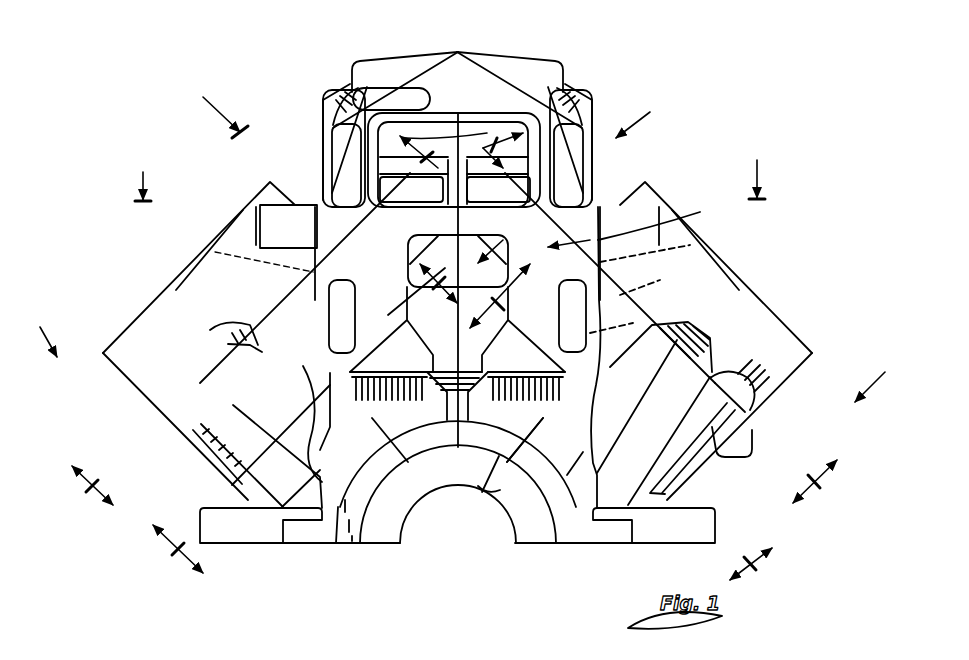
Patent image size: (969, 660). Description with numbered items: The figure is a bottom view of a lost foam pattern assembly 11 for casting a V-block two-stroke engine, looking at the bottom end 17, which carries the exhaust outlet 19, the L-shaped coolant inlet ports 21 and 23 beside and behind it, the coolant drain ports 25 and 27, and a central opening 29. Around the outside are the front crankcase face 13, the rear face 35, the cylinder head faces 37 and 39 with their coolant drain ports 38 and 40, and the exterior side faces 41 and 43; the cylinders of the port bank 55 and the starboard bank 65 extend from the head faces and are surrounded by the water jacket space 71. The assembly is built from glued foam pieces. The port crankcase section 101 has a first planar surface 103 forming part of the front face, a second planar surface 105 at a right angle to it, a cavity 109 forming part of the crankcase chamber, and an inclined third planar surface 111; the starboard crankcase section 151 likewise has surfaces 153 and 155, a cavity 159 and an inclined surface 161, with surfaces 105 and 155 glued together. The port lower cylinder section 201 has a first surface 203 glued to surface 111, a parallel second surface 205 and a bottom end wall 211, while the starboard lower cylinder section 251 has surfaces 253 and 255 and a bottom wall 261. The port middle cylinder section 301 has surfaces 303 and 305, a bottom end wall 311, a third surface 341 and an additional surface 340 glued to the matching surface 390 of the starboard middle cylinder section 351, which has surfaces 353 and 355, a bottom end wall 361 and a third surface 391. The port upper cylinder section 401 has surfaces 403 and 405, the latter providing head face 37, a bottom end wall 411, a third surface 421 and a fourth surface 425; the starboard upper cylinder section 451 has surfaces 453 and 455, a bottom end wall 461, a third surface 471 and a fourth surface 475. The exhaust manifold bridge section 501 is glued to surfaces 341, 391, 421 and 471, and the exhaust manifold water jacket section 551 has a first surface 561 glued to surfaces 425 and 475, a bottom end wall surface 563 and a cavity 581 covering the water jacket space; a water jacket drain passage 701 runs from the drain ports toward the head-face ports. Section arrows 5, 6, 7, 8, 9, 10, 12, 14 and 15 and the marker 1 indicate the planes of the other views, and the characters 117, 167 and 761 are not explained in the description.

The cylinder block 1 is at (658, 107).
The section line 5 is at (615, 451).
The section line 6 is at (322, 441).
The section line 7 is at (879, 389).
The section line 8 is at (845, 446).
The section line 9 is at (664, 318).
The section line 10 is at (662, 400).
The lost foam pattern assembly 11 is at (97, 223).
The section line 12 is at (229, 289).
The front crankcase face 13 is at (577, 563).
The section line 14 is at (314, 355).
The section line 15 is at (451, 148).
The bottom end 17 is at (693, 194).
The exhaust outlet 19 is at (495, 130).
The coolant inlet port 21 is at (353, 147).
The coolant inlet port 23 is at (547, 87).
The coolant drain port 25 is at (327, 322).
The coolant drain port 27 is at (610, 298).
The central opening 29 is at (441, 266).
The rear face 35 is at (389, 62).
The cylinder head face 37 is at (787, 323).
The coolant drain port 38 is at (740, 277).
The cylinder head face 39 is at (117, 340).
The coolant drain port 40 is at (177, 278).
The exterior side face 41 is at (222, 448).
The exterior side face 43 is at (707, 457).
The port bank 55 is at (797, 363).
The starboard bank 65 is at (147, 363).
The water jacket space 71 is at (576, 200).
The port crankcase section 101 is at (578, 515).
The first planar surface 103 is at (638, 543).
The second planar surface 105 is at (487, 490).
The cavity 109 is at (477, 523).
The third planar surface 111 is at (484, 469).
The bulkhead web 117 is at (572, 525).
The starboard crankcase section 151 is at (350, 527).
The first planar surface 153 is at (355, 545).
The second planar face 155 is at (455, 463).
The cavity 159 is at (433, 523).
The third planar surface 161 is at (383, 418).
The left pan rail 167 is at (345, 510).
The port lower cylinder section 201 is at (634, 480).
The first planar surface 203 is at (545, 405).
The second planar surface 205 is at (617, 356).
The bottom end wall 211 is at (603, 440).
The starboard lower cylinder section 251 is at (258, 496).
The first planar surface 253 is at (400, 398).
The second planar surface 255 is at (370, 345).
The bottom wall 261 is at (310, 420).
The port middle cylinder section 301 is at (763, 417).
The first planar surface 303 is at (612, 400).
The second planar surface 305 is at (660, 317).
The bottom end wall 311 is at (598, 268).
The fourth planar surface 340 is at (460, 218).
The third planar surface 341 is at (540, 205).
The starboard middle cylinder section 351 is at (228, 430).
The first planar surface 353 is at (303, 370).
The second planar surface 355 is at (290, 303).
The bottom end wall 361 is at (288, 226).
The fourth planar surface 390 is at (450, 220).
The third planar surface 391 is at (443, 176).
The port upper cylinder section 401 is at (763, 327).
The first planar surface 403 is at (647, 313).
The second planar surface 405 is at (613, 210).
The bottom end wall 411 is at (710, 257).
The third surface 421 is at (560, 127).
The fourth surface 425 is at (583, 187).
The starboard upper cylinder section 451 is at (200, 276).
The first planar surface 453 is at (264, 265).
The second planar surface 455 is at (238, 217).
The bottom end wall 461 is at (207, 258).
The third surface 471 is at (352, 120).
The fourth surface 475 is at (330, 193).
The exhaust manifold bridge section 501 is at (461, 165).
The exhaust manifold water jacket section 551 is at (514, 58).
The first planar surface 561 is at (347, 177).
The bottom end wall surface 563 is at (460, 58).
The cavity 581 is at (385, 93).
The water jacket drain passage 701 is at (570, 312).
The left post slot 761 is at (372, 243).